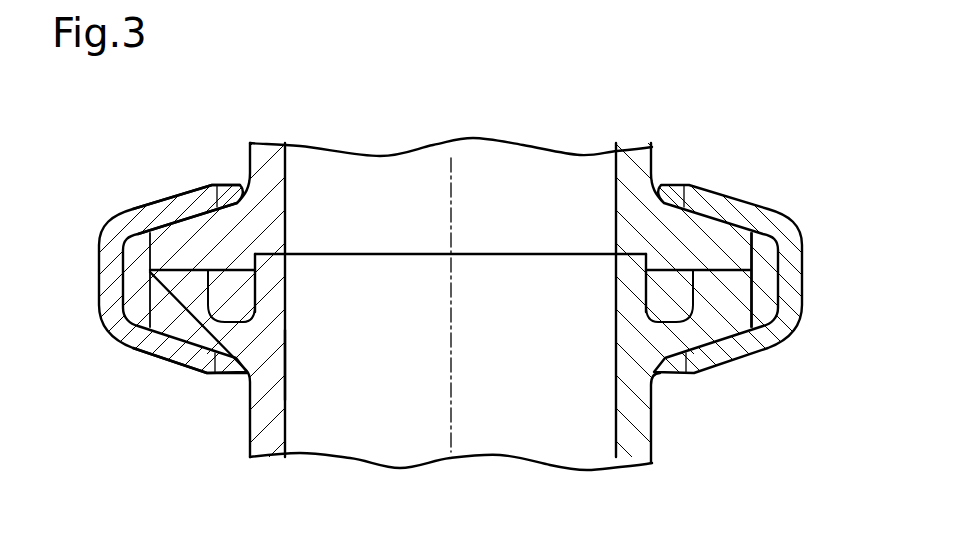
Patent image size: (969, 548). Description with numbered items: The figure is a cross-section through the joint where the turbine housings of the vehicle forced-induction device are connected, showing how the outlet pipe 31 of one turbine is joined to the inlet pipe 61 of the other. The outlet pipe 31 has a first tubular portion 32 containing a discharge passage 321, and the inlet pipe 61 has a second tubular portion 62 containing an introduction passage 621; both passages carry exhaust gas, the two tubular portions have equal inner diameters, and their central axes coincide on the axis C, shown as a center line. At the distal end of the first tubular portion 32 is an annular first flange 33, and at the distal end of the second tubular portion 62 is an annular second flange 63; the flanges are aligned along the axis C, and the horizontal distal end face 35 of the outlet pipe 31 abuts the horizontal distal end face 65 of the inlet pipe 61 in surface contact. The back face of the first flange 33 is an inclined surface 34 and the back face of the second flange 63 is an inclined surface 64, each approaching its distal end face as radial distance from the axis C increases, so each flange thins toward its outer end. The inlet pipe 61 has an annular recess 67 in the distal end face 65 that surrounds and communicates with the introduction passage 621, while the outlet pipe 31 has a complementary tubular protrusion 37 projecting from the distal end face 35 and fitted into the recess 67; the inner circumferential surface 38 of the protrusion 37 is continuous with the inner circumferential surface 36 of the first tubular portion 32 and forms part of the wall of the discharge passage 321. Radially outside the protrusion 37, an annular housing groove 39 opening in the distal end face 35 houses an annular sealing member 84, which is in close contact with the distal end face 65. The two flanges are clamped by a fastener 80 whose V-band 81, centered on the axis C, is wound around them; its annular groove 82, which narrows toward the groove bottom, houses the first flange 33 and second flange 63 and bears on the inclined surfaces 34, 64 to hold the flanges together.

The axis C is at (453, 172).
The outlet pipe 31 is at (518, 448).
The first tubular portion 32 is at (279, 428).
The first flange 33 is at (162, 297).
The inclined surface 34 is at (142, 352).
The distal end face 35 is at (200, 240).
The inner circumferential surface 36 is at (286, 356).
The protrusion 37 is at (279, 272).
The inner circumferential surface 38 is at (284, 262).
The housing groove 39 is at (257, 305).
The inlet pipe 61 is at (552, 160).
The second tubular portion 62 is at (283, 170).
The second flange 63 is at (118, 243).
The inclined surface 64 is at (172, 218).
The distal end face 65 is at (167, 268).
The recess 67 is at (266, 258).
The fastener 80 is at (751, 255).
The V-band 81 is at (778, 207).
The annular groove 82 is at (715, 228).
The sealing member 84 is at (235, 280).
The discharge passage 321 is at (533, 367).
The introduction passage 621 is at (531, 212).